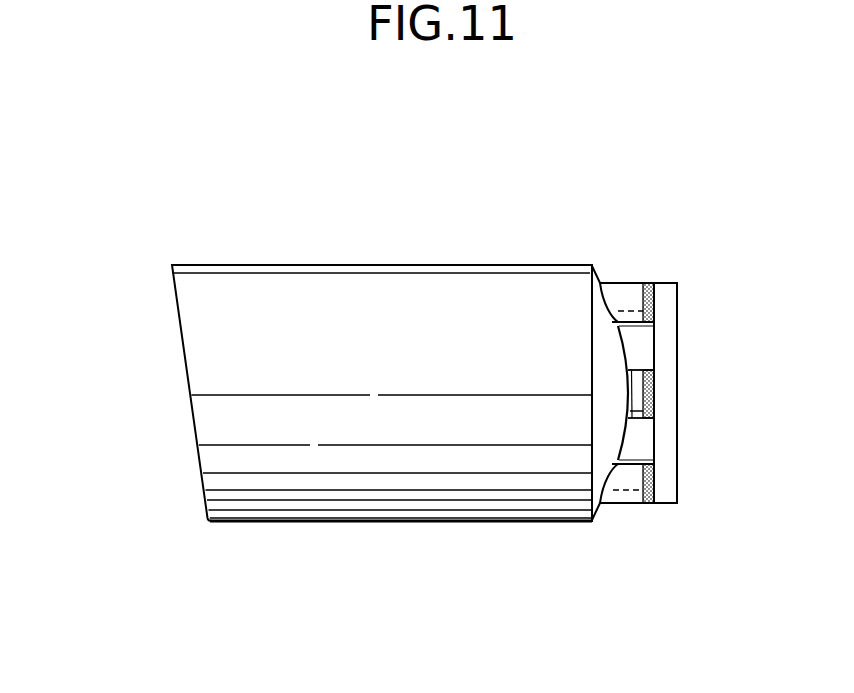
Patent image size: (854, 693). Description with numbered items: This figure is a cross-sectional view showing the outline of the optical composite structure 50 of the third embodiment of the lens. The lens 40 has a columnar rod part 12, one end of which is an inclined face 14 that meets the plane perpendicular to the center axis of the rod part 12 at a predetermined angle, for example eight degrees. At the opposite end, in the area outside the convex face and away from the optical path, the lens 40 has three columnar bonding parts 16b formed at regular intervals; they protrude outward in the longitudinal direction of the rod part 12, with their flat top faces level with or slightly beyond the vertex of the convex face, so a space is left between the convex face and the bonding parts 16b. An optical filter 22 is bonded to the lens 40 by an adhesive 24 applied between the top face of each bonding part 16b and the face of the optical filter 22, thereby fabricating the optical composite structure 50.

The rod part 12 is at (390, 265).
The inclined face 14 is at (200, 415).
The bonding parts 16b is at (617, 293).
The optical filter 22 is at (668, 352).
The adhesive 24 is at (648, 283).
The lens 40 is at (297, 256).
The optical composite structure 50 is at (510, 227).